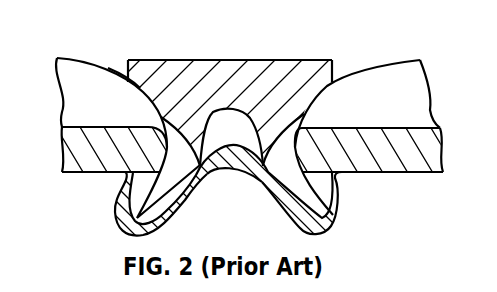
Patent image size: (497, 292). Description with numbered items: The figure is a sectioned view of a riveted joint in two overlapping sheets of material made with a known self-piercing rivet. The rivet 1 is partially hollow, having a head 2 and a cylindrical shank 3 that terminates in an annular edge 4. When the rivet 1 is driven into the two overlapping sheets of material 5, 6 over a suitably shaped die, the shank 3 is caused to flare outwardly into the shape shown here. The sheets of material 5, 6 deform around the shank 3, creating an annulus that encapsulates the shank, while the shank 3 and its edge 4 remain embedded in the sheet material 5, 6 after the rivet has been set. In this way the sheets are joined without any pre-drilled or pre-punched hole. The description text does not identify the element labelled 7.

The rivet 1 is at (269, 83).
The head 2 is at (177, 67).
The shank 3 is at (262, 192).
The annular edge 4 is at (334, 218).
The sheet of material 5 is at (83, 97).
The sheet of material 6 is at (75, 157).
The lip sealing edge 7 is at (120, 72).